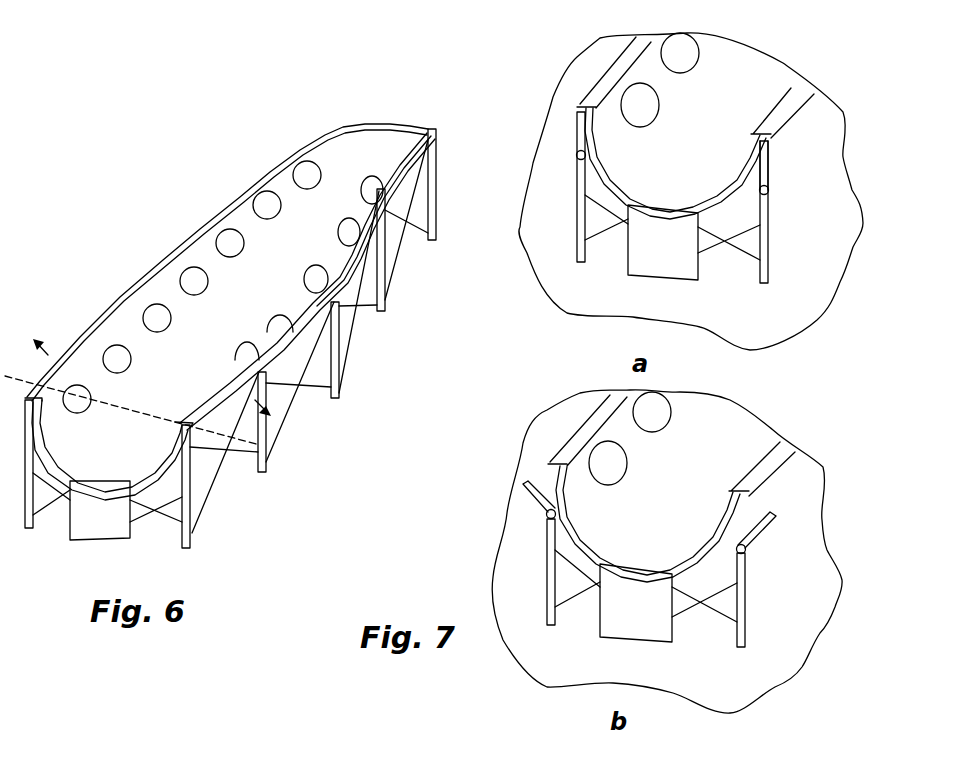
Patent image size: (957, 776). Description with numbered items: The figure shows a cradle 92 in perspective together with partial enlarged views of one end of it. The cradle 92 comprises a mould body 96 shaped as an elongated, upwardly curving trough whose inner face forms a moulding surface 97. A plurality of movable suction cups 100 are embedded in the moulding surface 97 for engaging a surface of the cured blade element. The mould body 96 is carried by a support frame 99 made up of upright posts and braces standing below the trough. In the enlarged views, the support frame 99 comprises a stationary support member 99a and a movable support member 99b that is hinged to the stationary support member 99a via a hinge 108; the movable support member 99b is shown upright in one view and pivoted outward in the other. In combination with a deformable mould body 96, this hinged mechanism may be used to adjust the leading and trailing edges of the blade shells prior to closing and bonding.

In FIG. 6, the cradle 92 is at (122, 221).
In FIG. 6, the movable suction cups 100 is at (265, 205).
In FIG. 6, the moulding surface 97 is at (302, 259).
In FIG. 6, the mould body 96 is at (330, 275).
In FIG. 7, the mould body 96 is at (603, 110).
In FIG. 6, the support frame 99 is at (340, 380).
In FIG. 7, the support frame 99 is at (768, 283).
In FIG. 7, the stationary support member 99a is at (770, 235).
In FIG. 7, the movable support member 99b is at (770, 162).
In FIG. 7, the hinge 108 is at (770, 188).